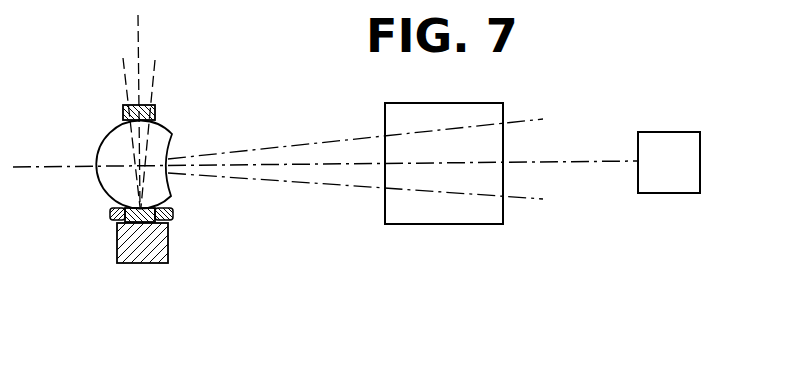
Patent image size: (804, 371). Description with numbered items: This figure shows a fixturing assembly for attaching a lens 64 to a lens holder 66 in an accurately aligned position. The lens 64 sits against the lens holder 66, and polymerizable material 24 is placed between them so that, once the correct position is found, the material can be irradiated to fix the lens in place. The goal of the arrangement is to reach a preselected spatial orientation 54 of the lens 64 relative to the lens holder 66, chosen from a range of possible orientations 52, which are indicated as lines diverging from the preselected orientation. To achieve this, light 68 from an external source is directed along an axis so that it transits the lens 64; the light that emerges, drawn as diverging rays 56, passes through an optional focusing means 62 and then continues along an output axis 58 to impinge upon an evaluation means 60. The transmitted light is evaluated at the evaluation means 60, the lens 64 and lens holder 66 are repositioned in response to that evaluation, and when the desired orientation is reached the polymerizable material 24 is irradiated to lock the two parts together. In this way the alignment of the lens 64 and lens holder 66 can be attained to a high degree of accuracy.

The polymerizable material 24 is at (112, 212).
The range of possible orientations 52 is at (124, 70).
The preselected spatial orientation 54 is at (140, 52).
The diverging beam rays 56 is at (303, 148).
The output beam axis 58 is at (543, 162).
The evaluation means 60 is at (657, 132).
The focusing means 62 is at (451, 103).
The lens 64 is at (122, 146).
The lens holder 66 is at (157, 112).
The light 68 is at (53, 168).